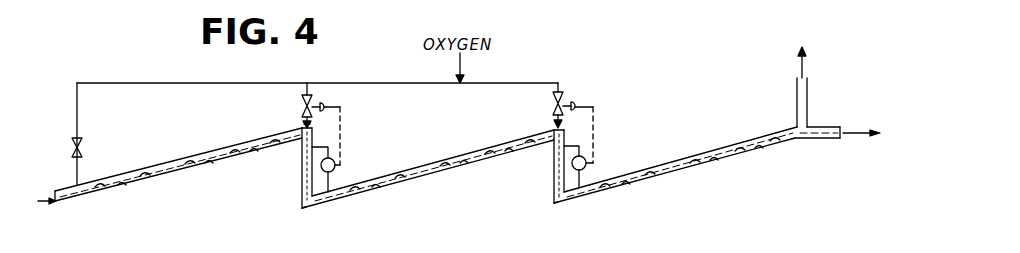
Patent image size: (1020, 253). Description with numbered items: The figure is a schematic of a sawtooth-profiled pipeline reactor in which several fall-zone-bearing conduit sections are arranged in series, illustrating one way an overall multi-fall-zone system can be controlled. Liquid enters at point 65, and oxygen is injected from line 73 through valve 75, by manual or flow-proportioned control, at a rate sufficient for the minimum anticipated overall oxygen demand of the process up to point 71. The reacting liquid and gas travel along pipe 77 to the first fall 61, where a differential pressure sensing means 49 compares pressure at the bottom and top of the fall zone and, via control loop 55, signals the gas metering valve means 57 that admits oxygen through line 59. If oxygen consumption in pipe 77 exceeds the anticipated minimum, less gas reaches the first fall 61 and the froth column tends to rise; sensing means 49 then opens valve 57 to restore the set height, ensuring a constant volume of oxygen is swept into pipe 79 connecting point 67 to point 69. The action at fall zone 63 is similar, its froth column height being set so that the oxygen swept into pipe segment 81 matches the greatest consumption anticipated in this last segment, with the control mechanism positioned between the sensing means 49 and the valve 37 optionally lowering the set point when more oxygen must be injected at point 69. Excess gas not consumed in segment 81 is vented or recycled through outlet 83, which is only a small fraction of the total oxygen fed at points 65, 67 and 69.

The valve 37 is at (565, 96).
The differential pressure sensing means 49 is at (337, 165).
The control loop 55 is at (340, 128).
The gas metering valve means 57 is at (301, 104).
The line 59 is at (300, 126).
The first fall 61 is at (302, 170).
The fall zone 63 is at (553, 175).
The point 65 is at (88, 200).
The point 67 is at (305, 209).
The point 69 is at (566, 201).
The point 71 is at (813, 140).
The line 73 is at (156, 83).
The valve 75 is at (84, 149).
The pipe 77 is at (180, 182).
The pipe 79 is at (403, 182).
The pipe segment 81 is at (680, 172).
The outlet 83 is at (808, 85).